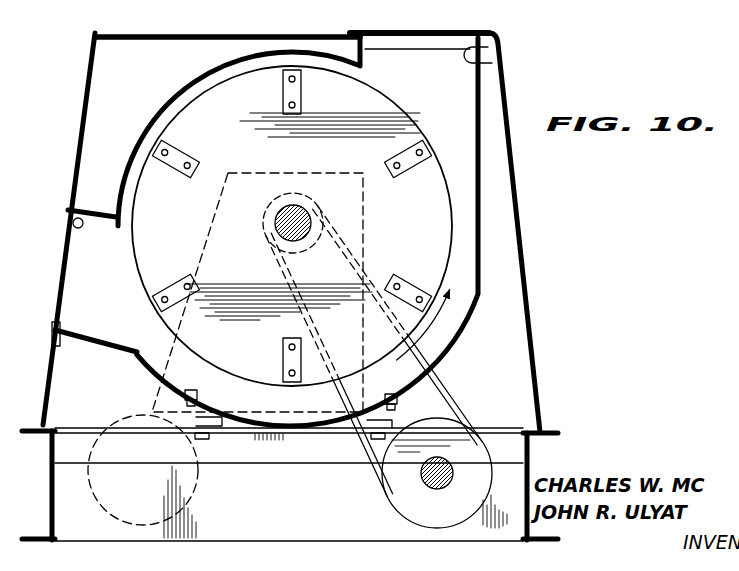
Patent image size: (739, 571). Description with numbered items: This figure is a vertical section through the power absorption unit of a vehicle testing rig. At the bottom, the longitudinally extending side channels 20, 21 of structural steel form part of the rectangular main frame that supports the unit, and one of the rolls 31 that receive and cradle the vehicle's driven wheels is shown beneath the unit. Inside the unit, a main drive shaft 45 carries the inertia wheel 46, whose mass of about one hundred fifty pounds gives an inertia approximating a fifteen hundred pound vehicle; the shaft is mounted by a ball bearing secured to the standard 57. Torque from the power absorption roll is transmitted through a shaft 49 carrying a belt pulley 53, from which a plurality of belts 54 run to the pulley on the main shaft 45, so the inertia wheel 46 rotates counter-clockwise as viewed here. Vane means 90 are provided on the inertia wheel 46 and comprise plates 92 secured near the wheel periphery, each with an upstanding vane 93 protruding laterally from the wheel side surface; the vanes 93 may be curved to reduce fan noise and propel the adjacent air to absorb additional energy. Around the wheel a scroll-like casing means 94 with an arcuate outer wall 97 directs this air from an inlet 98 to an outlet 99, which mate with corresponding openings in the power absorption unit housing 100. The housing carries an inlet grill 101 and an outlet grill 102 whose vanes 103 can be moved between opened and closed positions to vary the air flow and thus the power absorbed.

The side channel 20 is at (549, 432).
The side channel 21 is at (48, 483).
The roll 31 is at (128, 414).
The main drive shaft 45 is at (296, 206).
The inertia wheel 46 is at (383, 98).
The shaft 49 is at (430, 483).
The belt pulley 53 is at (446, 445).
The belts 54 is at (438, 381).
The standard 57 is at (205, 245).
The vane means 90 is at (281, 88).
The plate 92 is at (394, 173).
The vane 93 is at (404, 148).
The scroll-like casing means 94 is at (487, 224).
The arcuate outer wall 97 is at (173, 98).
The inlet 98 is at (84, 212).
The outlet 99 is at (492, 63).
The power absorption unit housing 100 is at (520, 302).
The inlet grill 101 is at (55, 331).
The outlet grill 102 is at (351, 33).
The vanes 103 is at (398, 34).